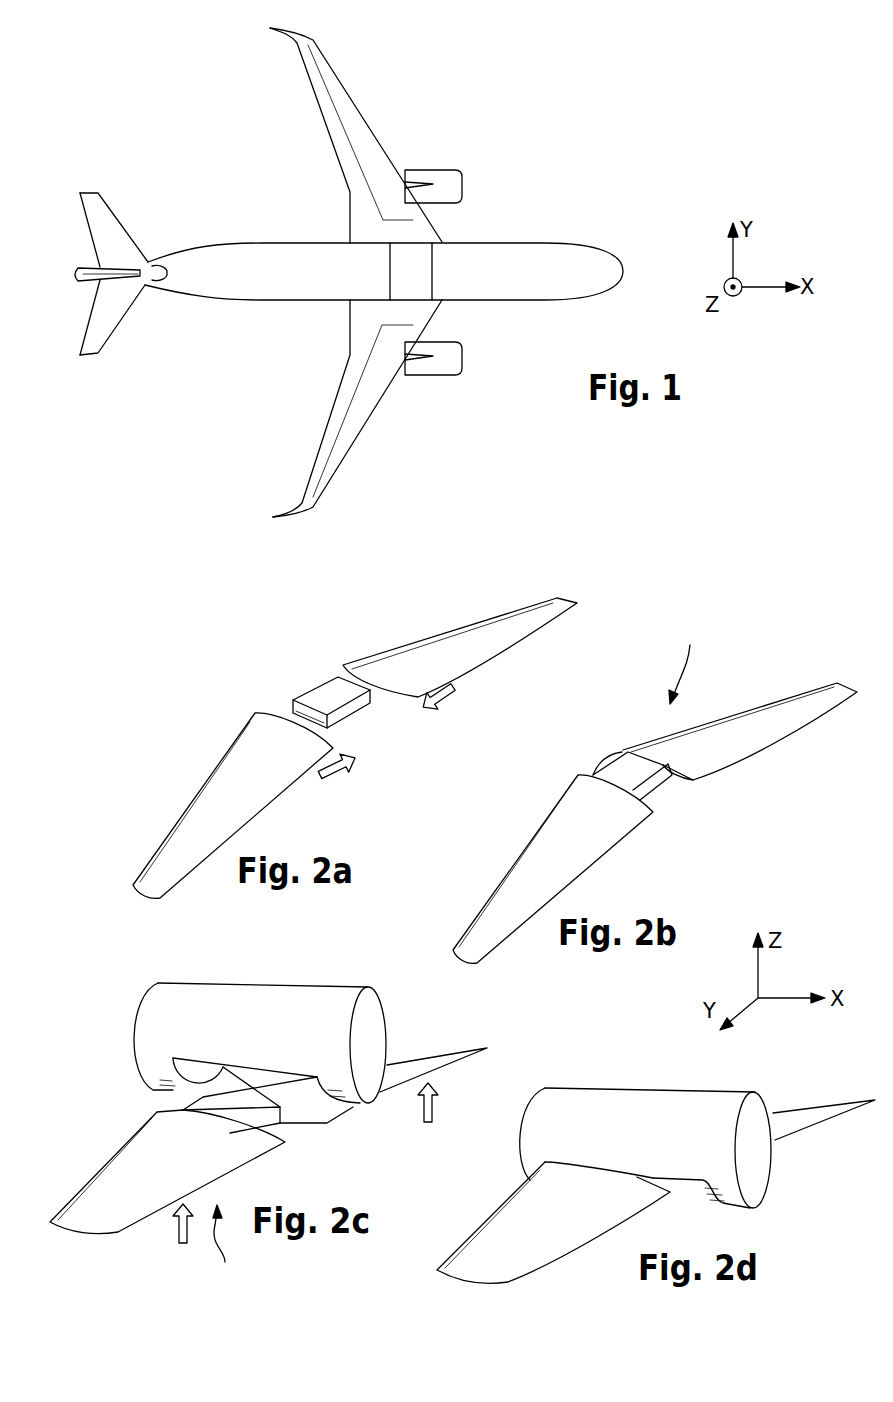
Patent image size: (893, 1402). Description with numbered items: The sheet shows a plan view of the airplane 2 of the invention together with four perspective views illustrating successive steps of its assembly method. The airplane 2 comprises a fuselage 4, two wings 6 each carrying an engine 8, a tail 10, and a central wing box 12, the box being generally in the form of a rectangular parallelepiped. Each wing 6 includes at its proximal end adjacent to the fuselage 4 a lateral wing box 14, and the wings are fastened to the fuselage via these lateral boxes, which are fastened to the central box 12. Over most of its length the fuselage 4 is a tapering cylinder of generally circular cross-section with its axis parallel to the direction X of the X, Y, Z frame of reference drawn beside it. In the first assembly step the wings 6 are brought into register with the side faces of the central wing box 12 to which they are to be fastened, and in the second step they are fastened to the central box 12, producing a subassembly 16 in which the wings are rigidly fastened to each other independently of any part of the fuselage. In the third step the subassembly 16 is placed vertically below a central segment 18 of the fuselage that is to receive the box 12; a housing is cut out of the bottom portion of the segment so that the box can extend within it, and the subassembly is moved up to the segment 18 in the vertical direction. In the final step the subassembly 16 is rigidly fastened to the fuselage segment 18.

In FIG. 1, the airplane 2 is at (593, 207).
In FIG. 1, the fuselage 4 is at (302, 282).
In FIG. 1, the wing 6 is at (355, 133).
In FIG. 2A, the wing 6 is at (237, 782).
In FIG. 2B, the wing 6 is at (548, 858).
In FIG. 2C, the wing 6 is at (428, 1058).
In FIG. 2D, the wing 6 is at (527, 1217).
In FIG. 1, the engine 8 is at (443, 177).
In FIG. 1, the tail 10 is at (93, 266).
In FIG. 1, the central wing box 12 is at (415, 262).
In FIG. 2A, the central wing box 12 is at (320, 695).
In FIG. 2B, the central wing box 12 is at (615, 773).
In FIG. 2C, the central wing box 12 is at (225, 1112).
In FIG. 1, the lateral wing box 14 is at (398, 230).
In FIG. 2B, the subassembly 16 is at (687, 660).
In FIG. 2C, the subassembly 16 is at (227, 1245).
In FIG. 2C, the central segment of the fuselage 18 is at (246, 1024).
In FIG. 2D, the central segment of the fuselage 18 is at (578, 1113).